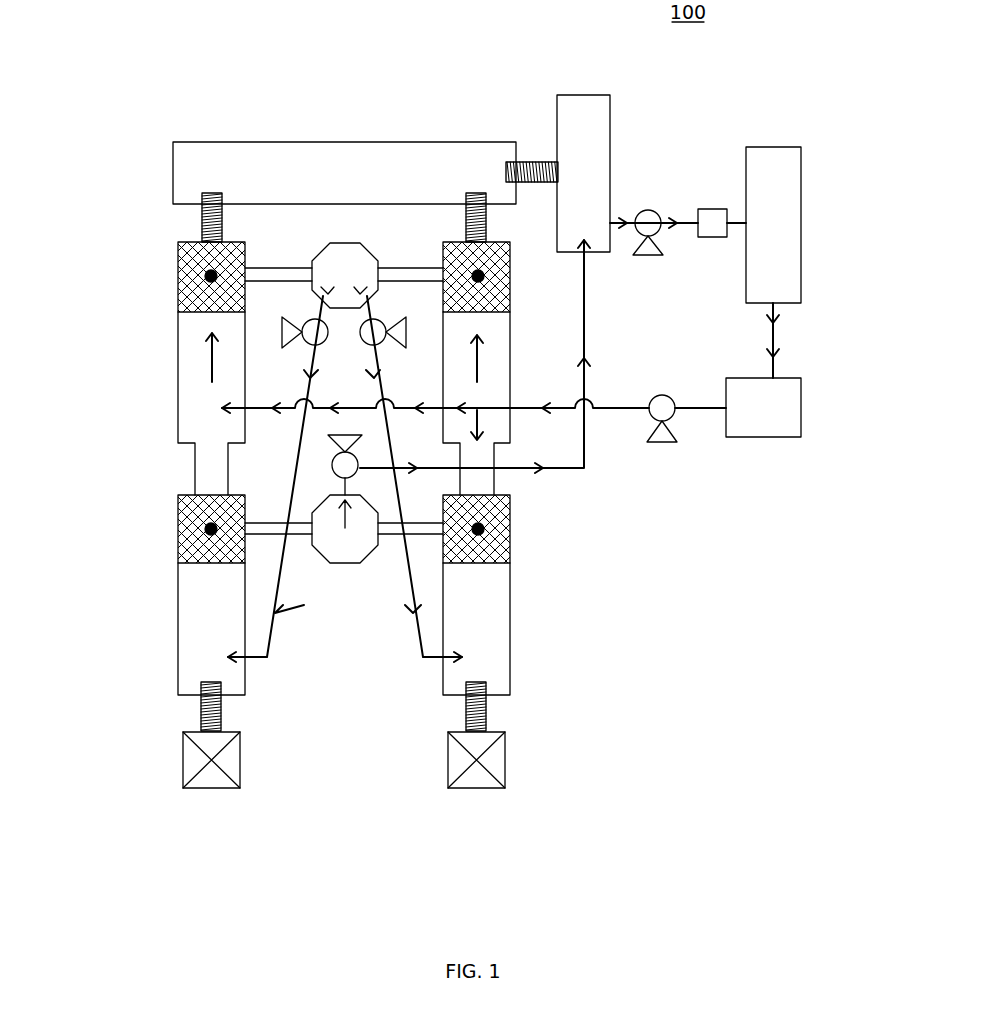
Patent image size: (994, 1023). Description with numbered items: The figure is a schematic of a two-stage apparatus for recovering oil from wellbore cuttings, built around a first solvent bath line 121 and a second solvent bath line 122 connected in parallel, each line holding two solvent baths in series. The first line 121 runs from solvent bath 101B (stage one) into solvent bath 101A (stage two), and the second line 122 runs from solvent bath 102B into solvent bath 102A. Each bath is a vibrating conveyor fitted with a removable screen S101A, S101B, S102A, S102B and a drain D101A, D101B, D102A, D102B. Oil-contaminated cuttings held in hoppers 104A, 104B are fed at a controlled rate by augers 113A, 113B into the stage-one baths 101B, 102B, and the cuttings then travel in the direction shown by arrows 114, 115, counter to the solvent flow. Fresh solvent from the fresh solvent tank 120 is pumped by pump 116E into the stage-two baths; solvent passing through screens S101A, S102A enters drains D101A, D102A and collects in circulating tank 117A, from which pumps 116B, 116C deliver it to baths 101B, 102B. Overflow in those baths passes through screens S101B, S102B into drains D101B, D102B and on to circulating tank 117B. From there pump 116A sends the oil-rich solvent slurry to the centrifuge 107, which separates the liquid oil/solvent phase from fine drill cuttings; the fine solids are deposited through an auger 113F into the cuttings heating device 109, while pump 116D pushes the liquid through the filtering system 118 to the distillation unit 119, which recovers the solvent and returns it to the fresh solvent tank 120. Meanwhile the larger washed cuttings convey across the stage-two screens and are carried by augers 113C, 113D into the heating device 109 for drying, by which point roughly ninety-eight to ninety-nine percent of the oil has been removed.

The solvent bath 101A is at (196, 333).
The solvent bath 101B is at (196, 587).
The solvent bath 102A is at (495, 335).
The solvent bath 102B is at (495, 590).
The hopper 104A is at (215, 780).
The hopper 104B is at (480, 780).
The centrifuge 107 is at (583, 106).
The cuttings heating device 109 is at (427, 151).
The auger 113A is at (203, 710).
The auger 113B is at (487, 710).
The auger 113C is at (203, 232).
The auger 113D is at (486, 237).
The auger 113F is at (530, 164).
The arrow 114 is at (212, 360).
The arrow 115 is at (478, 360).
The pump 116A is at (340, 460).
The pump 116B is at (286, 330).
The pump 116C is at (404, 330).
The pump 116D is at (650, 222).
The pump 116E is at (667, 442).
The circulating tank 117A is at (346, 263).
The circulating tank 117B is at (345, 563).
The filtering system 118 is at (712, 238).
The distillation unit 119 is at (775, 152).
The fresh solvent tank 120 is at (757, 422).
The first solvent bath line 121 is at (156, 636).
The second solvent bath line 122 is at (526, 656).
The drain D101A is at (205, 276).
The drain D101B is at (205, 529).
The drain D102A is at (484, 276).
The drain D102B is at (484, 529).
The removable screen S101A is at (190, 292).
The removable screen S101B is at (190, 545).
The removable screen S102A is at (490, 295).
The removable screen S102B is at (500, 540).